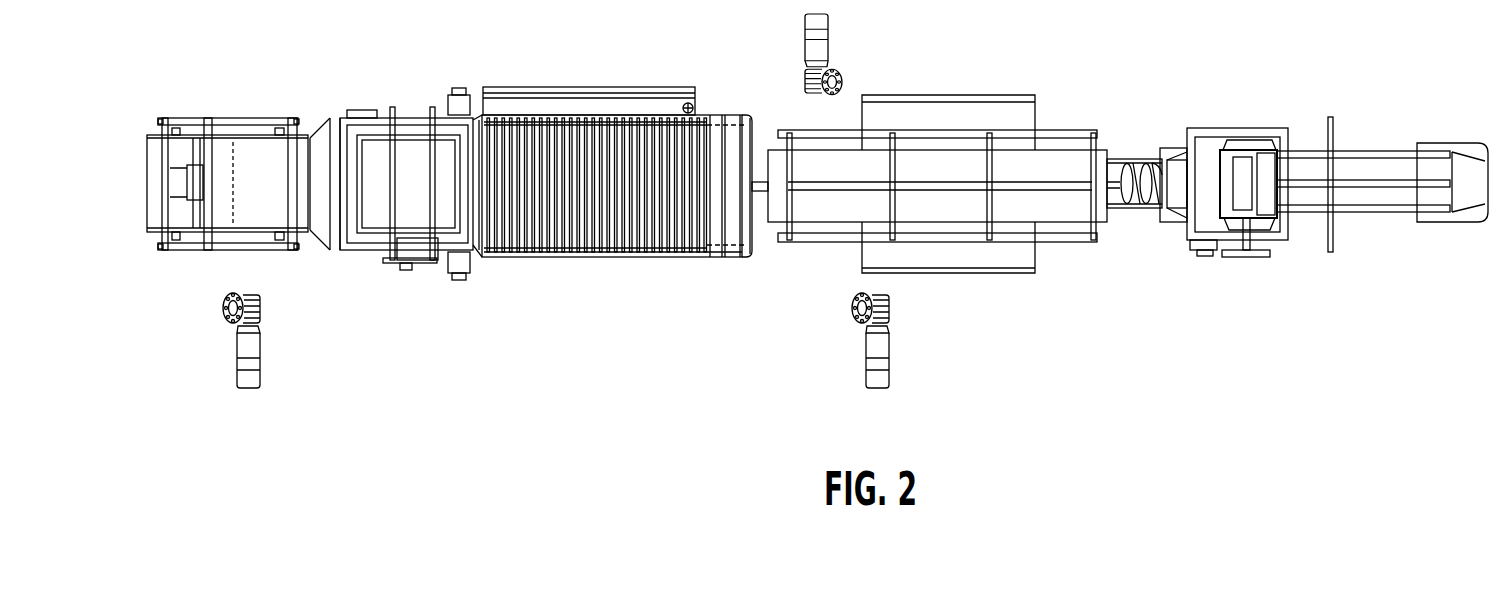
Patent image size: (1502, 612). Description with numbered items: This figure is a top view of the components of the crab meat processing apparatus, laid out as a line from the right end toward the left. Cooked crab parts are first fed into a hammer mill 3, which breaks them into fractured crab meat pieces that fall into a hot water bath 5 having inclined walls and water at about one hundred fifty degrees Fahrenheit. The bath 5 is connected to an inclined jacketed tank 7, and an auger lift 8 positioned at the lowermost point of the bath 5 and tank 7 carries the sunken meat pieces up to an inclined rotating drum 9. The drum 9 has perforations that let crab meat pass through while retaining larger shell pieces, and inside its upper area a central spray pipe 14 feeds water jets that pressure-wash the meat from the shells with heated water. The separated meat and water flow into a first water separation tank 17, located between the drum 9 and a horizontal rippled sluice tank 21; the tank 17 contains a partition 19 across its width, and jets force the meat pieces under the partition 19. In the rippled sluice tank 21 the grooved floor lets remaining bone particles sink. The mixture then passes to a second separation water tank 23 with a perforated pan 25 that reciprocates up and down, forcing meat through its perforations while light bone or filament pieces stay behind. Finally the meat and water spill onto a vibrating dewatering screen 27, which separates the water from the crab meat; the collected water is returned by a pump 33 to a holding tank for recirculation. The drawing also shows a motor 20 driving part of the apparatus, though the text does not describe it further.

The hammer mill 3 is at (1248, 145).
The hot water bath 5 is at (1210, 128).
The inclined jacketed tank 7 is at (1167, 150).
The auger lift 8 is at (1142, 172).
The inclined rotating drum 9 is at (1060, 168).
The central spray pipe 14 is at (933, 183).
The first water separation tank 17 is at (747, 230).
The partition 19 is at (723, 213).
The motor 20 is at (862, 352).
The rippled sluice tank 21 is at (568, 207).
The second separation water tank 23 is at (368, 250).
The perforated pan 25 is at (385, 157).
The vibrating dewatering screen 27 is at (222, 160).
The pump 33 is at (255, 352).